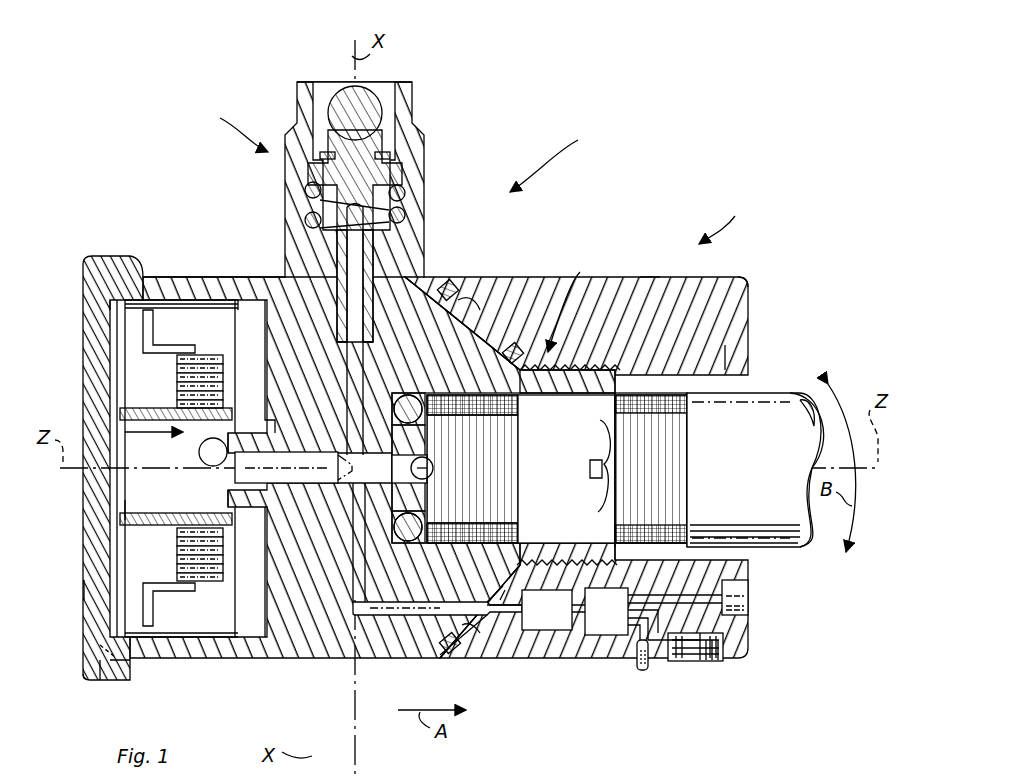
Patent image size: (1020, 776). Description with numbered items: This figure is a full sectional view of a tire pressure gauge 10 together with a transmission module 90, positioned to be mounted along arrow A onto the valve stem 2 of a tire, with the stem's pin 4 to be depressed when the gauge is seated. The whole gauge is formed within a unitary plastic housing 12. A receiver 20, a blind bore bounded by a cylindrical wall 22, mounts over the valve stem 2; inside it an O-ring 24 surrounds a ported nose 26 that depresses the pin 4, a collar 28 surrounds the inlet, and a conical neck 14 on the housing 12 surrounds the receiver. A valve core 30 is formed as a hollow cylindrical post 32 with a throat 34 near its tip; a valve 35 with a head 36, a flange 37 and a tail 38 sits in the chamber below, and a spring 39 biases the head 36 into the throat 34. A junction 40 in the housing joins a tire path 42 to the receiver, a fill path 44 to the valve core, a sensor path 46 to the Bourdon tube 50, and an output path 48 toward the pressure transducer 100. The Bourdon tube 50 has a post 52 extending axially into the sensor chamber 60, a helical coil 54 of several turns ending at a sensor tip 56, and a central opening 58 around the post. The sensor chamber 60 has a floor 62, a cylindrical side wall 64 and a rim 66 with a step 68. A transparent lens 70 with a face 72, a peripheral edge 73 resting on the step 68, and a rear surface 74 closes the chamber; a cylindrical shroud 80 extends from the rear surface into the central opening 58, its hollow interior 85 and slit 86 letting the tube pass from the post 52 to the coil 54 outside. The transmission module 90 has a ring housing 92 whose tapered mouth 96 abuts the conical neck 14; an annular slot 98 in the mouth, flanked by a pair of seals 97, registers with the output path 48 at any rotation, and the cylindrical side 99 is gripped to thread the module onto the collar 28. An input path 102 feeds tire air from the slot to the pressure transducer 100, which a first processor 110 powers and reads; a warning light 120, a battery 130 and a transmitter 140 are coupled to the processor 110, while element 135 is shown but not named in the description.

The valve stem 2 is at (778, 388).
The pin 4 is at (594, 460).
The gauge 10 is at (564, 157).
The housing 12 is at (258, 650).
The conical neck 14 is at (522, 320).
The receiver 20 is at (577, 300).
The cylindrical wall 22 is at (512, 534).
The O-ring 24 is at (416, 396).
The nose 26 is at (540, 556).
The collar 28 is at (562, 392).
The valve core 30 is at (230, 125).
The cylindrical post 32 is at (414, 184).
The throat 34 is at (338, 86).
The valve 35 is at (394, 160).
The head 36 is at (372, 108).
The flange 37 is at (392, 174).
The tail 38 is at (348, 242).
The spring 39 is at (306, 192).
The junction 40 is at (336, 456).
The tire path 42 is at (390, 478).
The fill path 44 is at (282, 362).
The sensor path 46 is at (260, 511).
The output path 48 is at (406, 620).
The Bourdon tube 50 is at (190, 370).
The post 52 is at (192, 480).
The coil 54 is at (192, 568).
The sensor tip 56 is at (153, 310).
The central opening 58 is at (124, 434).
The sensor chamber 60 is at (196, 330).
The floor 62 is at (246, 314).
The side wall 64 is at (172, 626).
The rim 66 is at (82, 672).
The step 68 is at (100, 646).
The lens 70 is at (90, 544).
The face 72 is at (84, 590).
The peripheral edge 73 is at (102, 662).
The rear surface 74 is at (128, 314).
The shroud 80 is at (140, 520).
The interior 85 is at (140, 502).
The slit 86 is at (162, 408).
The transmission module 90 is at (585, 428).
The ring housing 92 is at (736, 282).
The tapered mouth 96 is at (432, 290).
The seals 97 is at (452, 658).
The annular slot 98 is at (480, 302).
The cylindrical side 99 is at (650, 277).
The pressure transducer 100 is at (547, 610).
The input path 102 is at (510, 610).
The first processor 110 is at (600, 611).
The warning light 120 is at (644, 670).
The battery 130 is at (686, 646).
The connector pins 135 is at (702, 660).
The transmitter 140 is at (746, 596).